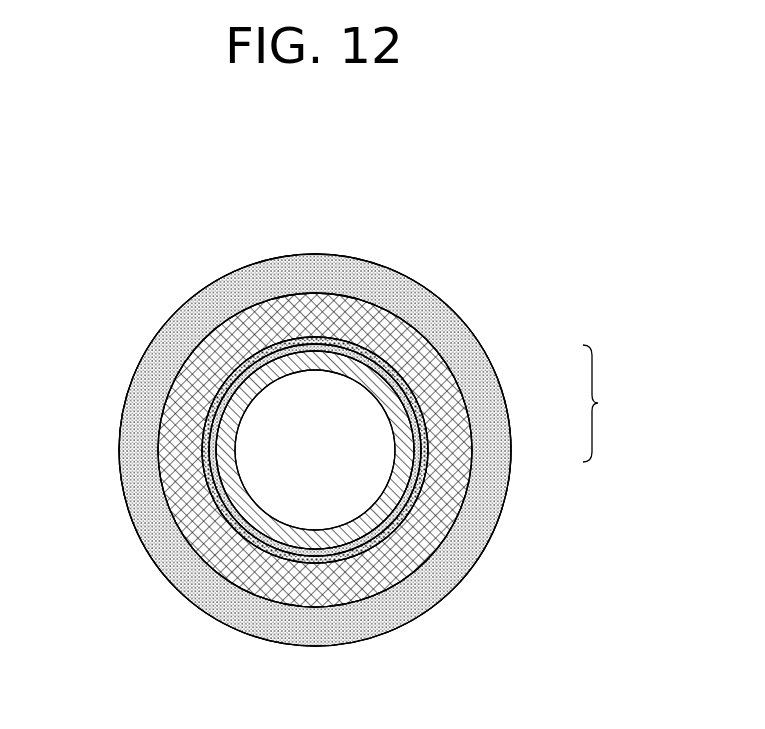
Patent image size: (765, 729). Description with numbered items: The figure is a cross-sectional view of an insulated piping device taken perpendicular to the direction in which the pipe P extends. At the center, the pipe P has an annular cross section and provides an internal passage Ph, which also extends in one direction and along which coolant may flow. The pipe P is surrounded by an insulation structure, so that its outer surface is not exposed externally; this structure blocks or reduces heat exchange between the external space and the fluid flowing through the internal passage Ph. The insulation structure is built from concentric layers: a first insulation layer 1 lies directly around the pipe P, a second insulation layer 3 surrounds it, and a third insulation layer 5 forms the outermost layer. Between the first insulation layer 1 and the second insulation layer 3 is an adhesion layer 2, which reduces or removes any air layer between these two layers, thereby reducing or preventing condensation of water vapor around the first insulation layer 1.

The first insulation layer 1 is at (398, 385).
The adhesion layer 2 is at (416, 403).
The second insulation layer 3 is at (457, 425).
The third insulation layer 5 is at (500, 447).
The pipe P is at (358, 370).
The internal passage Ph is at (296, 397).